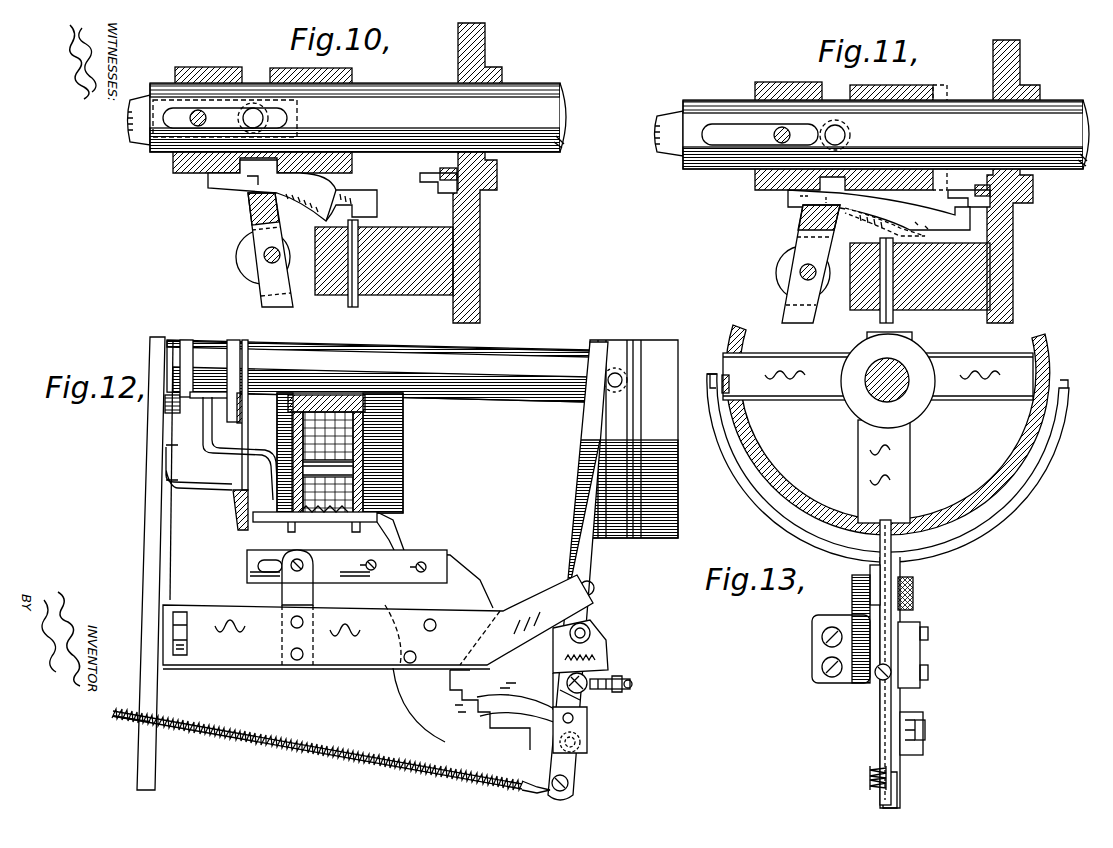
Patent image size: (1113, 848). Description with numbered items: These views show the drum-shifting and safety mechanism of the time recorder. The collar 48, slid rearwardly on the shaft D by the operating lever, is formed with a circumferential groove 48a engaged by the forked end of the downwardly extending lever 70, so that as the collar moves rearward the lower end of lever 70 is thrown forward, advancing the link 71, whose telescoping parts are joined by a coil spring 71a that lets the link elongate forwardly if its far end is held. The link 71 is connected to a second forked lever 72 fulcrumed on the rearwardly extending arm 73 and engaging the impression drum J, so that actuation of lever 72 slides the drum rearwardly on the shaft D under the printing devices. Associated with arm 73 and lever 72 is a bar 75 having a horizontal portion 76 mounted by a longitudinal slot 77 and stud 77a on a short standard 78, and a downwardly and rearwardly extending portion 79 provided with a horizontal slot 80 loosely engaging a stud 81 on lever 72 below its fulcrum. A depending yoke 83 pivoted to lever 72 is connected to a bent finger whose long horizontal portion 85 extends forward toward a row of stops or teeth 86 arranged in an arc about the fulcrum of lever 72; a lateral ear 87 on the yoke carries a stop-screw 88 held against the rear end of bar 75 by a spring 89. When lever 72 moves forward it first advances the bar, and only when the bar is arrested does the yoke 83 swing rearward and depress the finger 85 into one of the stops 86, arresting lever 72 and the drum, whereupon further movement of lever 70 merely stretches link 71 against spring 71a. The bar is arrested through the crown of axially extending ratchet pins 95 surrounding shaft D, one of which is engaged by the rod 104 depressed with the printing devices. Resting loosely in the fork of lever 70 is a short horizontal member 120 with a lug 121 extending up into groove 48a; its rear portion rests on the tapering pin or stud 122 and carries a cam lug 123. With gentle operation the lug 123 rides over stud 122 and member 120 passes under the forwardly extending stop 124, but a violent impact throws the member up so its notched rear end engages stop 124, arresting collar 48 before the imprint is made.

In FIG. 10, the collar 48 is at (182, 67).
In FIG. 10, the circumferential groove 48a is at (257, 76).
In FIG. 11, the circumferential groove 48a is at (836, 92).
In FIG. 10, the shaft D is at (532, 100).
In FIG. 11, the shaft D is at (872, 134).
In FIG. 12, the shaft D is at (524, 366).
In FIG. 13, the shaft D is at (900, 394).
In FIG. 12, the impression drum J is at (650, 345).
In FIG. 13, the impression drum J is at (752, 452).
In FIG. 10, the downwardly extending lever 70 is at (254, 208).
In FIG. 11, the downwardly extending lever 70 is at (800, 222).
In FIG. 12, the link 71 is at (348, 742).
In FIG. 13, the link 71 is at (870, 776).
In FIG. 12, the coil spring 71a is at (268, 730).
In FIG. 12, the forked lever 72 is at (605, 580).
In FIG. 13, the forked lever 72 is at (972, 536).
In FIG. 12, the rearwardly extending arm 73 is at (545, 602).
In FIG. 13, the rearwardly extending arm 73 is at (856, 592).
In FIG. 12, the bar 75 is at (456, 557).
In FIG. 12, the horizontal portion 76 is at (354, 577).
In FIG. 13, the horizontal portion 76 is at (890, 577).
In FIG. 12, the longitudinal slot 77 is at (247, 568).
In FIG. 12, the stud 77a is at (293, 570).
In FIG. 12, the short standard 78 is at (314, 594).
In FIG. 13, the short standard 78 is at (870, 572).
In FIG. 12, the downwardly and rearwardly extending portion 79 is at (524, 676).
In FIG. 12, the horizontal slot 80 is at (588, 680).
In FIG. 12, the stud 81 is at (590, 692).
In FIG. 12, the depending yoke 83 is at (596, 630).
In FIG. 12, the long horizontal portion of bent finger 85 is at (590, 731).
In FIG. 12, the stops or teeth 86 is at (452, 716).
In FIG. 12, the lateral ear 87 is at (625, 684).
In FIG. 13, the lateral ear 87 is at (915, 684).
In FIG. 12, the stop-screw 88 is at (632, 690).
In FIG. 13, the stop-screw 88 is at (880, 680).
In FIG. 12, the spring 89 is at (600, 662).
In FIG. 12, the ratchet pins 95 is at (403, 452).
In FIG. 12, the rod 104 is at (210, 432).
In FIG. 10, the short horizontally arranged member 120 is at (212, 181).
In FIG. 10, the lug 121 is at (247, 178).
In FIG. 11, the lug 121 is at (800, 193).
In FIG. 10, the pin or stud 122 is at (352, 302).
In FIG. 10, the cam lug 123 is at (345, 212).
In FIG. 11, the cam lug 123 is at (900, 214).
In FIG. 10, the forwardly extending stop 124 is at (422, 180).
In FIG. 11, the forwardly extending stop 124 is at (962, 202).